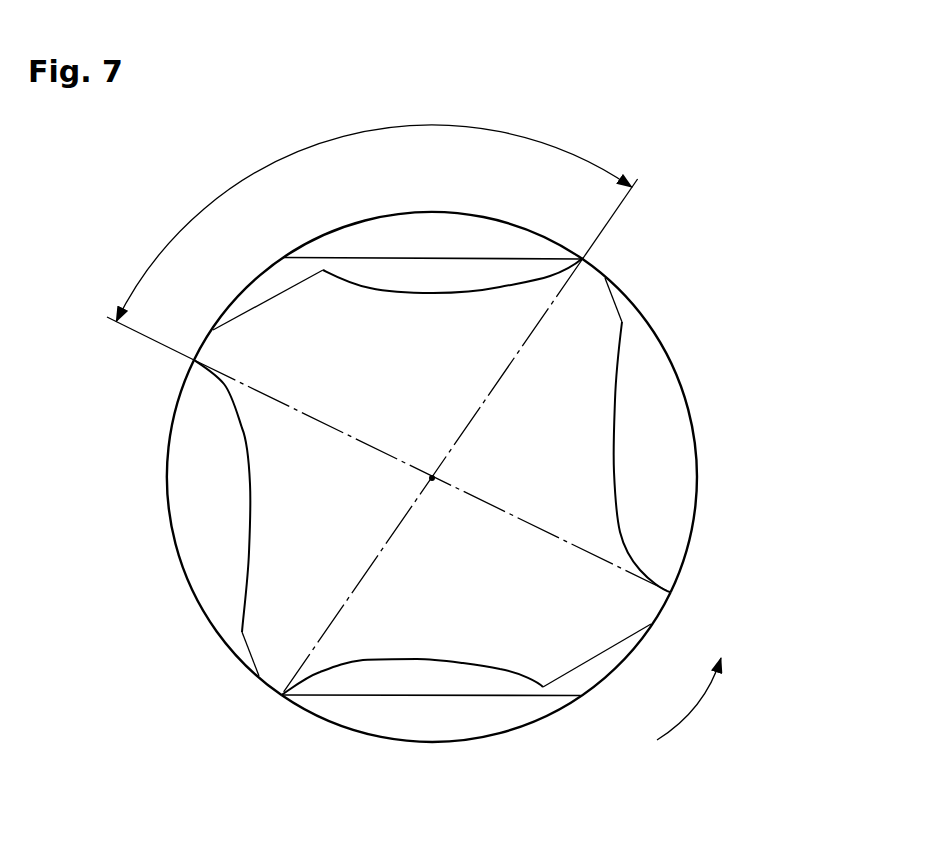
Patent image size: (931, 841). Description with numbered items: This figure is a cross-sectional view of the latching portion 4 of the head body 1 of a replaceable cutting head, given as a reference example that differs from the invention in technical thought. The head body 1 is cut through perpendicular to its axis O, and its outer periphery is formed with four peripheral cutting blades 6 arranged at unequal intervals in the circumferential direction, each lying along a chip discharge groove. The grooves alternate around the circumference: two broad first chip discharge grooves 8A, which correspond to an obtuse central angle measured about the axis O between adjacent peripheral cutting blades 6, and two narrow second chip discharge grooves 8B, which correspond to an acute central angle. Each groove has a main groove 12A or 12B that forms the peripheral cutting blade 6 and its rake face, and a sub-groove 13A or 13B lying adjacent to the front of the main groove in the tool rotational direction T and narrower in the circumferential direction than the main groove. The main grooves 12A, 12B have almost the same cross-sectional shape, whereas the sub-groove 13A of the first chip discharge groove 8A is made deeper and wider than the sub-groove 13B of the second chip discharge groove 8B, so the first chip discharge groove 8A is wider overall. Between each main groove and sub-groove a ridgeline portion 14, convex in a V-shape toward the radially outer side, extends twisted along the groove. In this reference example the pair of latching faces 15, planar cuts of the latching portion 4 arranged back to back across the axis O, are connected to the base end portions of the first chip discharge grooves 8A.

The head body 1 is at (747, 170).
The latching portion 4 is at (668, 176).
The peripheral cutting blade 6 is at (582, 258).
The first chip discharge groove 8A is at (383, 260).
The second chip discharge groove 8B is at (641, 383).
The main groove of first chip discharge groove 12A is at (433, 291).
The main groove of second chip discharge groove 12B is at (618, 468).
The sub-groove of first chip discharge groove 13A is at (268, 300).
The sub-groove of second chip discharge groove 13B is at (613, 300).
The ridgeline portion 14 is at (323, 270).
The latching face 15 is at (490, 258).
The axis O is at (436, 474).
The tool rotational direction T is at (689, 699).